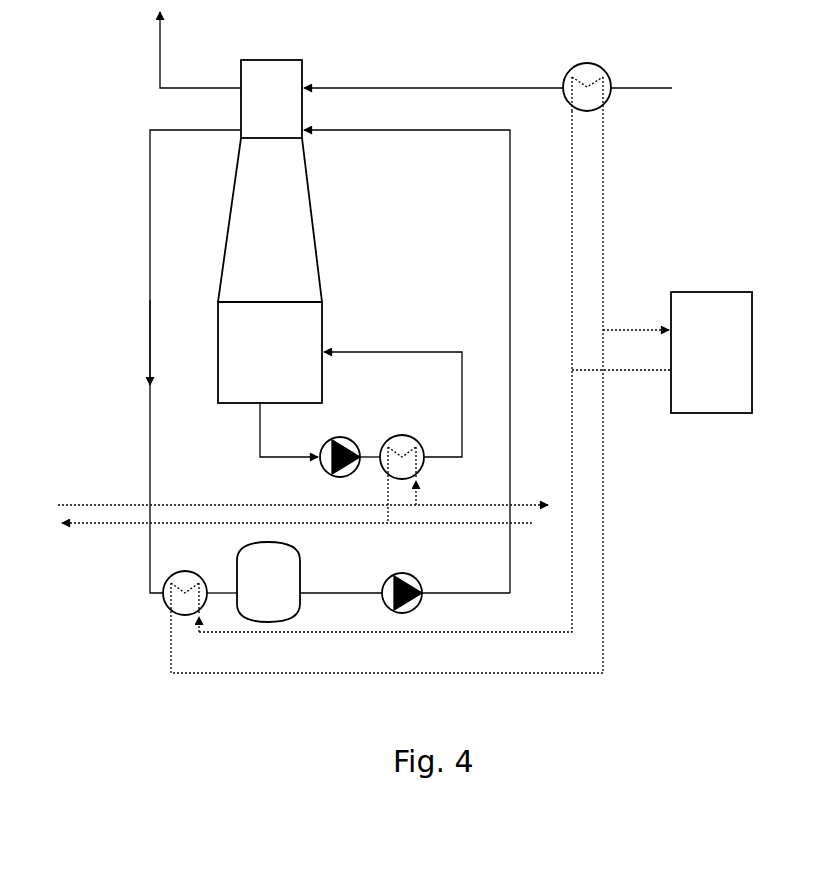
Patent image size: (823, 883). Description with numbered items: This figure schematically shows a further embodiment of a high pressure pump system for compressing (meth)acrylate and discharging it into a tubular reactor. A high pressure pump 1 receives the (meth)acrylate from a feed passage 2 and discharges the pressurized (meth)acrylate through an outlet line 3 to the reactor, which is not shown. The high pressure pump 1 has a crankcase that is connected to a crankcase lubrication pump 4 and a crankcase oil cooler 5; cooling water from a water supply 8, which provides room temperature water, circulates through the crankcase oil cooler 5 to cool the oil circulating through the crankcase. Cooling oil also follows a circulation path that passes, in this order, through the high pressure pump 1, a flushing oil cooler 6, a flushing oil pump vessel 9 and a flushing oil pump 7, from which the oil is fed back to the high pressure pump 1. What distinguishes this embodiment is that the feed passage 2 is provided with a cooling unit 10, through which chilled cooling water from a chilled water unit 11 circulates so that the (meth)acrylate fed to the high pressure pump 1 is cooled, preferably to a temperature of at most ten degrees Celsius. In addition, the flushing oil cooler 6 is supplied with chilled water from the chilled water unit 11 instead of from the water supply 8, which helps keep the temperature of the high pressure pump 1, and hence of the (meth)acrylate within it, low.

The high pressure pump 1 is at (270, 231).
The feed passage 2 is at (491, 71).
The outlet line 3 is at (200, 50).
The crankcase lubrication pump 4 is at (340, 439).
The crankcase oil cooler 5 is at (402, 462).
The flushing oil cooler 6 is at (383, 392).
The flushing oil pump 7 is at (408, 585).
The water supply 8 is at (279, 514).
The flushing oil pump vessel 9 is at (268, 582).
The cooling unit 10 is at (587, 72).
The chilled water unit 11 is at (662, 335).